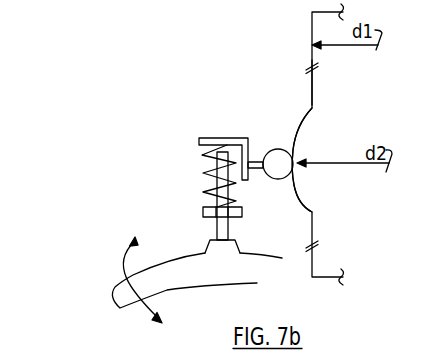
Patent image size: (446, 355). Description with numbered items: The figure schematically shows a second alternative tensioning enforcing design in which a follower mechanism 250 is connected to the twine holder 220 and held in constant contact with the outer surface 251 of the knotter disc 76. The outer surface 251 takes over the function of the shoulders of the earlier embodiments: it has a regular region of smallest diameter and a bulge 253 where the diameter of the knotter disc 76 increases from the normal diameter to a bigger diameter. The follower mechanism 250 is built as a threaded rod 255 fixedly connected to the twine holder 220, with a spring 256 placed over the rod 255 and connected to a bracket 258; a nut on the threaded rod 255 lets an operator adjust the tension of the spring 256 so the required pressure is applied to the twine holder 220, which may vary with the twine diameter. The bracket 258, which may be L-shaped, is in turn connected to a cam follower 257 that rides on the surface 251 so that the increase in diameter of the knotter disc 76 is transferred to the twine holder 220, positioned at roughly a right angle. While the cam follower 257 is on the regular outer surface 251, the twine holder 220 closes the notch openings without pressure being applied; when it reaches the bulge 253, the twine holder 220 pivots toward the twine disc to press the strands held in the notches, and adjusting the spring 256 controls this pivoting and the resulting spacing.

The follower mechanism 250 is at (129, 146).
The outer surface 251 is at (305, 85).
The bulge 253 is at (305, 149).
The threaded rod 255 is at (259, 228).
The spring 256 is at (213, 193).
The cam follower 257 is at (273, 160).
The bracket 258 is at (212, 139).
The knotter disc 76 is at (351, 100).
The twine holder 220 is at (232, 276).